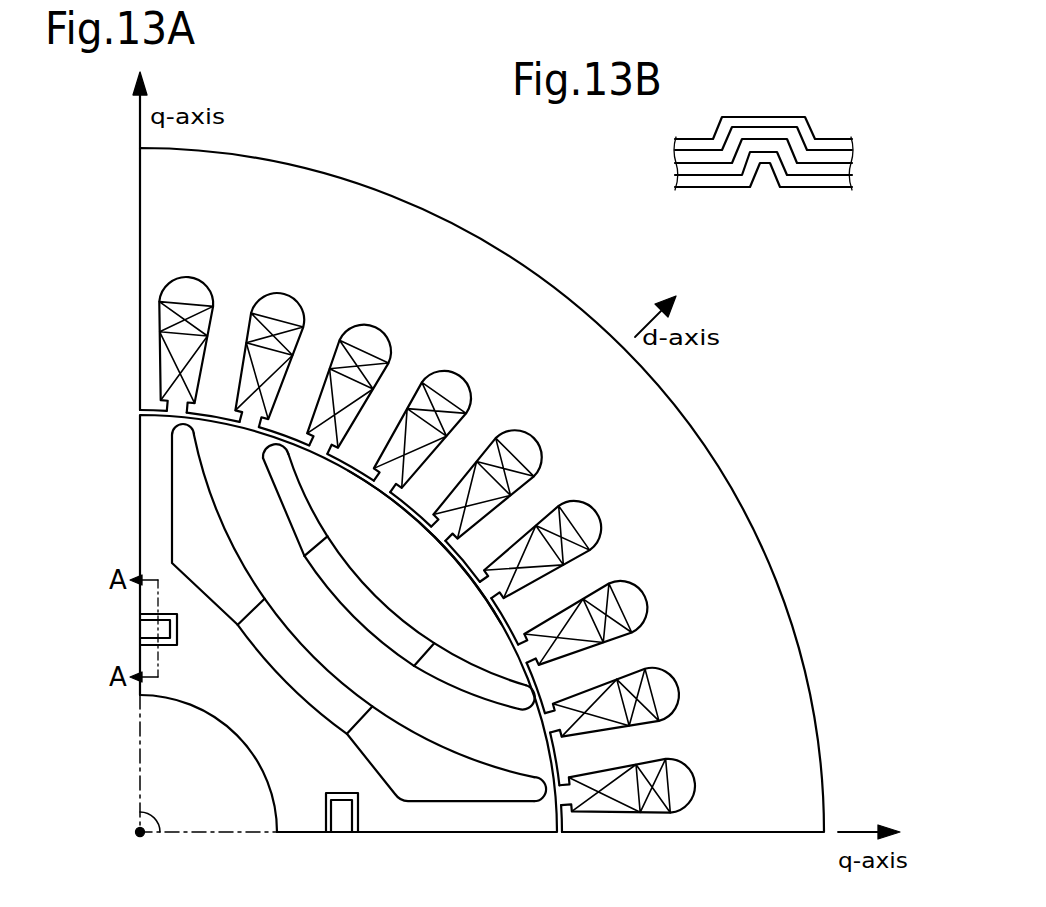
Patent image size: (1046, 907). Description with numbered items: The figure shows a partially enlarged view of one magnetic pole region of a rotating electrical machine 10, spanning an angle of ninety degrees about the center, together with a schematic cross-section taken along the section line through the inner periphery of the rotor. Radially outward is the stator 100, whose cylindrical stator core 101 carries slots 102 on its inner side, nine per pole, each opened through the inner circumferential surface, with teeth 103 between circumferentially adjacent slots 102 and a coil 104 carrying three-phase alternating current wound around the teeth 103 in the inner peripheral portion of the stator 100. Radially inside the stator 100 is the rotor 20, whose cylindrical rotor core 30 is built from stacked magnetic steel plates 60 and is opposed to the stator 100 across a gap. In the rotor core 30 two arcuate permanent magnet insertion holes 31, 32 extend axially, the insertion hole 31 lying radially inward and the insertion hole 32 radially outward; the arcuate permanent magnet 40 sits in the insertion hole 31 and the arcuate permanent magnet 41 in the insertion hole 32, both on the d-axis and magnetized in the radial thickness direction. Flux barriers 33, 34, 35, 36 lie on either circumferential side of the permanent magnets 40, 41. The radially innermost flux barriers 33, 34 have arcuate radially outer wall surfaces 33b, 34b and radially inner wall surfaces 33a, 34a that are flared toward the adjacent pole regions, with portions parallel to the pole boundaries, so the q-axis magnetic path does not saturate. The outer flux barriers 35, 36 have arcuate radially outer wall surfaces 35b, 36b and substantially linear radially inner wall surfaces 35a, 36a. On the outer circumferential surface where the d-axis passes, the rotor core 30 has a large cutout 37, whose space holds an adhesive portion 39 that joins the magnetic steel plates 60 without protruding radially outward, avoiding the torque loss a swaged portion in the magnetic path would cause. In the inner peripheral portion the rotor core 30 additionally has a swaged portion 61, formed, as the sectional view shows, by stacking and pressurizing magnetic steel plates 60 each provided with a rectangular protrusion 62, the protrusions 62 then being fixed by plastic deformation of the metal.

In FIG. 13A, the rotary electric machine 10 is at (473, 514).
In FIG. 13A, the rotor 20 is at (215, 726).
In FIG. 13A, the rotor core 30 is at (180, 696).
In FIG. 13A, the permanent magnet insertion hole 31 is at (313, 704).
In FIG. 13A, the permanent magnet insertion hole 32 is at (393, 647).
In FIG. 13A, the flux barrier 33 is at (174, 537).
In FIG. 13A, the radially inner wall surface 33a is at (170, 526).
In FIG. 13A, the radially outer wall surface 33b is at (212, 514).
In FIG. 13A, the flux barrier 34 is at (427, 769).
In FIG. 13A, the radially inner wall surface 34a is at (445, 790).
In FIG. 13A, the radially outer wall surface 34b is at (473, 755).
In FIG. 13A, the flux barrier 35 is at (304, 508).
In FIG. 13A, the radially inner wall surface 35a is at (274, 478).
In FIG. 13A, the radially outer wall surface 35b is at (300, 484).
In FIG. 13A, the flux barrier 36 is at (474, 685).
In FIG. 13A, the radially inner wall surface 36a is at (467, 684).
In FIG. 13A, the radially outer wall surface 36b is at (447, 644).
In FIG. 13A, the cutout 37 is at (467, 580).
In FIG. 13A, the adhesive portion 39 is at (413, 533).
In FIG. 13A, the permanent magnet 40 is at (253, 647).
In FIG. 13A, the permanent magnet 41 is at (327, 573).
In FIG. 13B, the magnetic steel plate 60 is at (831, 148).
In FIG. 13A, the swaged portion 61 is at (152, 628).
In FIG. 13B, the swaged portion 61 is at (734, 117).
In FIG. 13B, the protrusion 62 is at (772, 152).
In FIG. 13A, the stator 100 is at (501, 490).
In FIG. 13A, the stator core 101 is at (754, 518).
In FIG. 13A, the slot 102 is at (374, 322).
In FIG. 13A, the teeth 103 is at (327, 347).
In FIG. 13A, the coil 104 is at (442, 460).